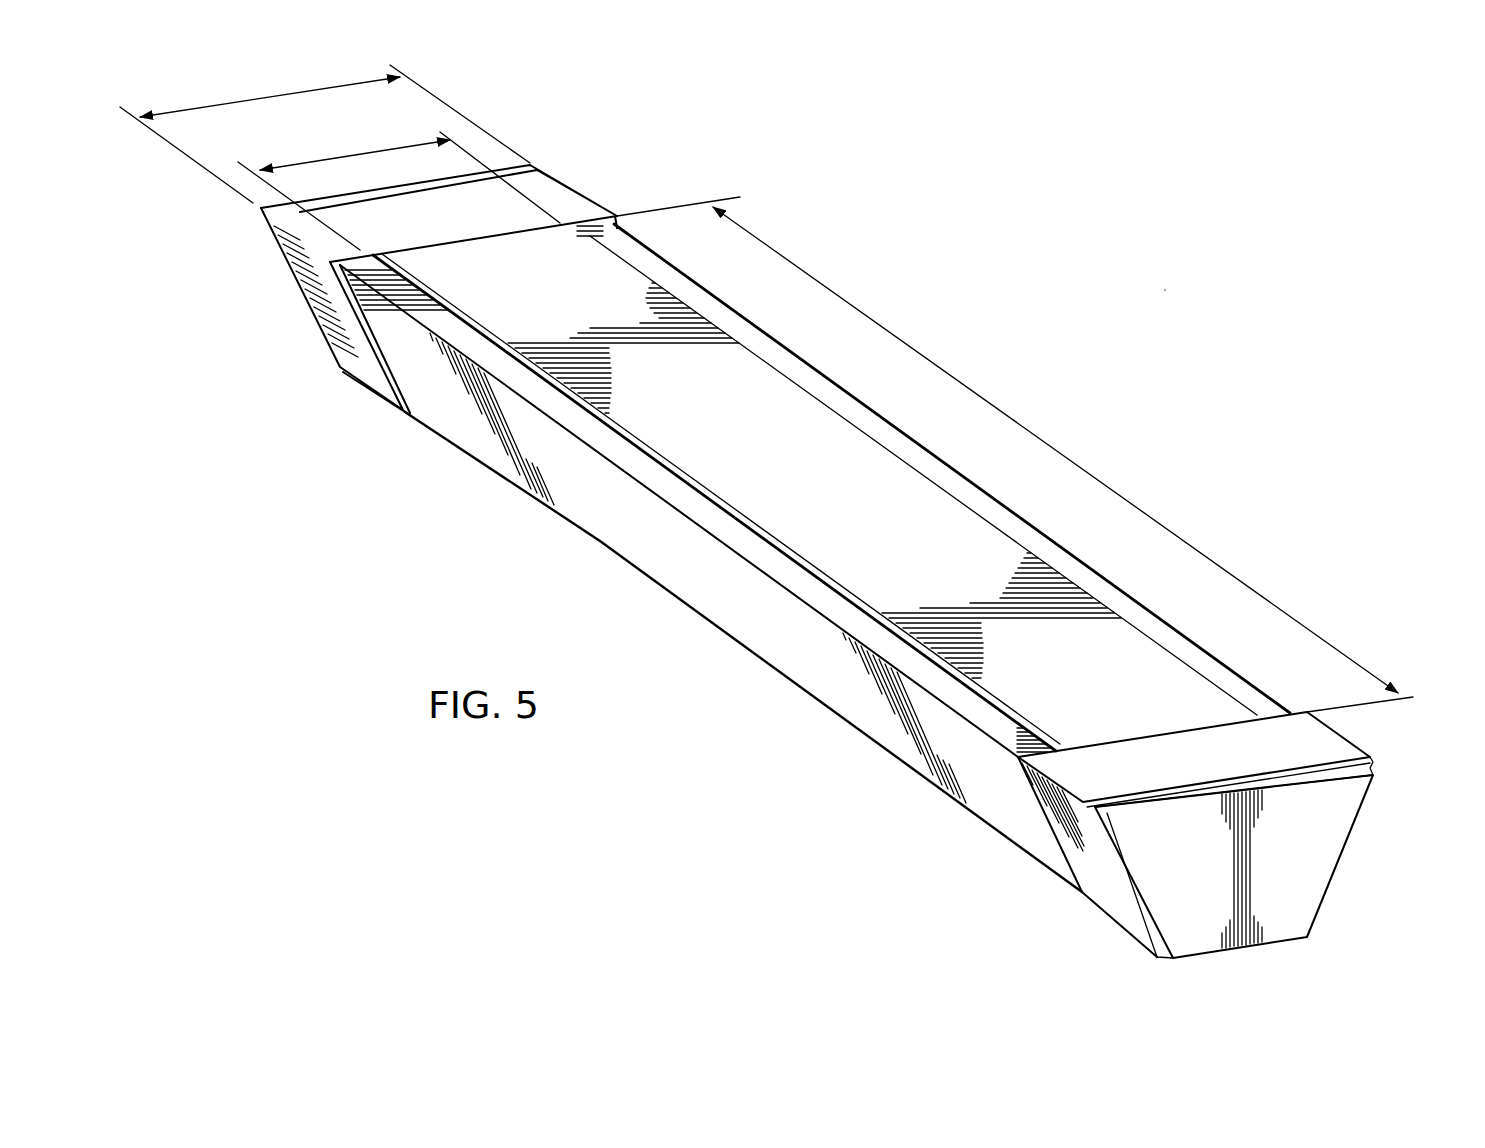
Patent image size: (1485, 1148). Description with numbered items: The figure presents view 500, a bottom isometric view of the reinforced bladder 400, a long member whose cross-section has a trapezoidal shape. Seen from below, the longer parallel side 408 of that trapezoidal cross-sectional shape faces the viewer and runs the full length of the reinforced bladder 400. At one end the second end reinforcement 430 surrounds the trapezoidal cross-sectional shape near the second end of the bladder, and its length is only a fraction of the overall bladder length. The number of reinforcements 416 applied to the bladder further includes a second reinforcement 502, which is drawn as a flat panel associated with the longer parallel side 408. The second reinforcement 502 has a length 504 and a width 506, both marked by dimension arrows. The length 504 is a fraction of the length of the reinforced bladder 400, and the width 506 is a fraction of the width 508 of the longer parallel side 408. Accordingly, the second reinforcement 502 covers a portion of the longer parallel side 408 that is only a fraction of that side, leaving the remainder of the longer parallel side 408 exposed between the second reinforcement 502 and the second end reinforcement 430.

The reinforced bladder 400 is at (945, 290).
The longer parallel side 408 is at (1345, 752).
The number of reinforcements 416 is at (1193, 500).
The second end reinforcement 430 is at (1118, 915).
The view 500 is at (1165, 290).
The second reinforcement 502 is at (803, 397).
The length 504 is at (1053, 448).
The width 506 is at (355, 157).
The width 508 is at (272, 93).